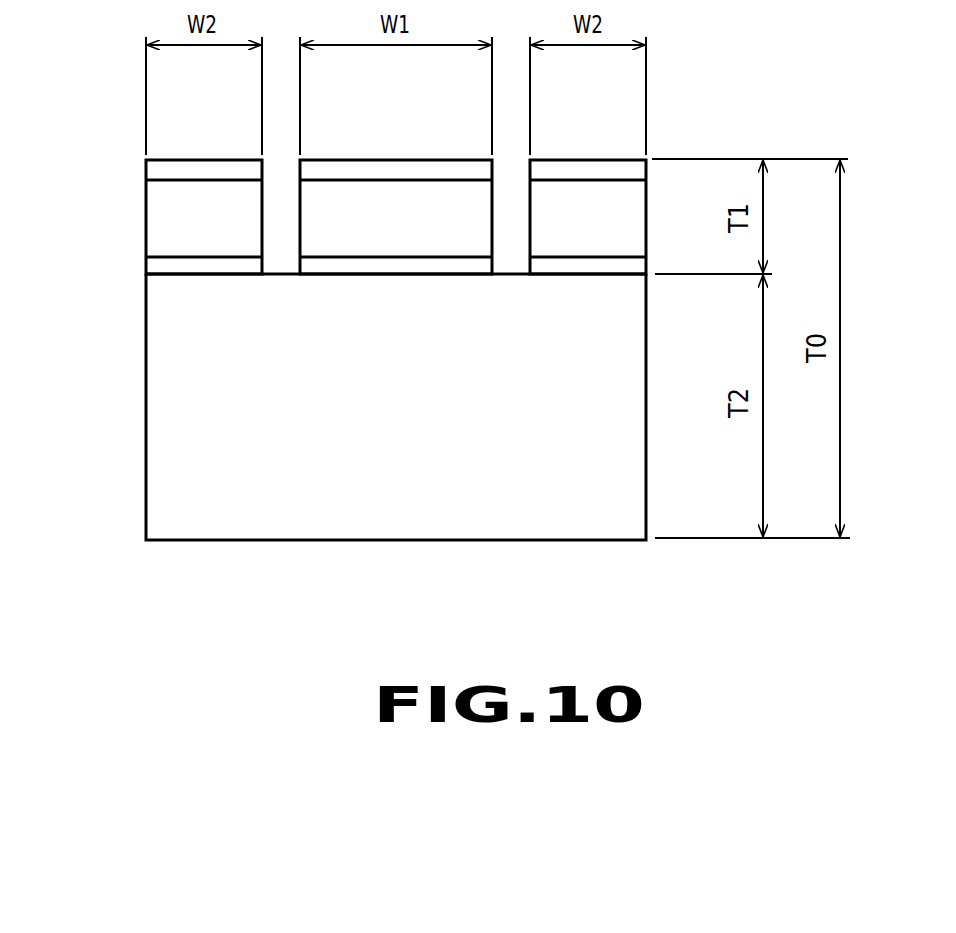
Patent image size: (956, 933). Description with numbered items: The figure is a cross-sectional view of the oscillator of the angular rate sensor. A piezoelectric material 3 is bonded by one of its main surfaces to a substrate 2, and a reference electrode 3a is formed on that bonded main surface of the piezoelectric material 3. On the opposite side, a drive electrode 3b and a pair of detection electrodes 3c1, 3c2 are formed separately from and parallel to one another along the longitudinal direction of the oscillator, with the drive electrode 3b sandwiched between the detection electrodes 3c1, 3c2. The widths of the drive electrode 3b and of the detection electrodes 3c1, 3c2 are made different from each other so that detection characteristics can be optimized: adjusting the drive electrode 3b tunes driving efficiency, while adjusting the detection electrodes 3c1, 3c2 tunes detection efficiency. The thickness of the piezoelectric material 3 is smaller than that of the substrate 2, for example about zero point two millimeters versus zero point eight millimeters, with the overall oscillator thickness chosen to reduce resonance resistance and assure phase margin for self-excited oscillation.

The substrate 2 is at (187, 411).
The piezoelectric material 3 is at (341, 205).
The reference electrode 3a is at (341, 288).
The drive electrode 3b is at (395, 170).
The detection electrode 3c1 is at (202, 170).
The detection electrode 3c2 is at (586, 170).